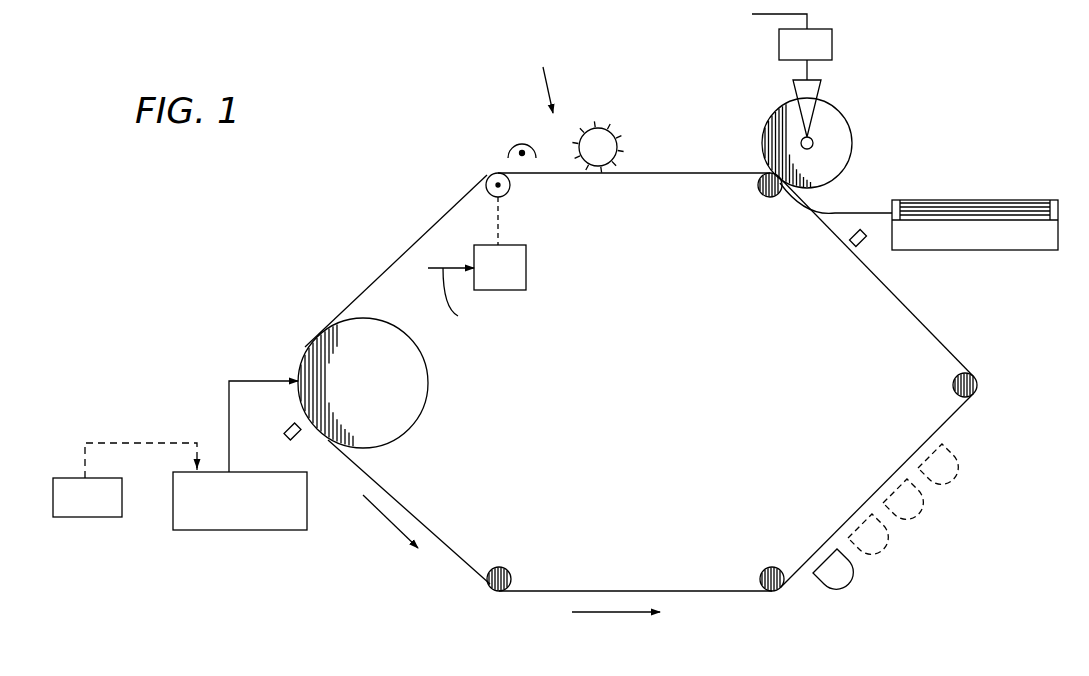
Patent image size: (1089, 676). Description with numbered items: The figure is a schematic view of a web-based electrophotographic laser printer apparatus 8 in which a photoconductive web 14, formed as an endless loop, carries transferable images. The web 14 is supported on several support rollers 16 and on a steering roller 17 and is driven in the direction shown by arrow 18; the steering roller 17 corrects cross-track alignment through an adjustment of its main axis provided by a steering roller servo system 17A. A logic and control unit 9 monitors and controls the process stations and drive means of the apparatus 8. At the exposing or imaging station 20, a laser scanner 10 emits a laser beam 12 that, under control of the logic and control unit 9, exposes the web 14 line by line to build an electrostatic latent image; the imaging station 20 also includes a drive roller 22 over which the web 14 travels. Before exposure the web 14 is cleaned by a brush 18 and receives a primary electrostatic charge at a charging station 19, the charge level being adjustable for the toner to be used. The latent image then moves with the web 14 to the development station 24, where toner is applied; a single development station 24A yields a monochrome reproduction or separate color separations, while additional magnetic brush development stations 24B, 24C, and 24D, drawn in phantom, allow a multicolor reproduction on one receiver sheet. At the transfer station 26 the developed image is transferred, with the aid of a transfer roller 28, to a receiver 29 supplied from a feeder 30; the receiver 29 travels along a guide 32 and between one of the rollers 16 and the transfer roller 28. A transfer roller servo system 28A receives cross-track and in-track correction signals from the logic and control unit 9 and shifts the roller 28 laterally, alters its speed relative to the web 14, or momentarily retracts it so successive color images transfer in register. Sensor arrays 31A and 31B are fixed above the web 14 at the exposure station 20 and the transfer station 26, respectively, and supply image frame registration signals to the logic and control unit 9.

The laser printer apparatus 8 is at (545, 80).
The logic and control unit 9 is at (85, 518).
The laser scanner 10 is at (240, 531).
The laser beam 12 is at (229, 416).
The photoconductive web 14 is at (866, 272).
The support rollers 16 is at (758, 192).
The steering roller 17 is at (510, 190).
The steering roller servo system 17A is at (526, 258).
The arrow 18 is at (620, 120).
The charging station 19 is at (493, 148).
The exposing or imaging station 20 is at (326, 292).
The drive roller 22 is at (428, 388).
The development station 24 is at (1060, 578).
The single development station 24A is at (857, 578).
The additional development station 24B is at (895, 543).
The additional development station 24C is at (930, 507).
The additional development station 24D is at (962, 470).
The transfer station 26 is at (733, 142).
The transfer roller 28 is at (853, 135).
The transfer roller servo system 28A is at (832, 48).
The receiver 29 is at (1022, 200).
The feeder 30 is at (1005, 243).
The sensor array 31A is at (290, 425).
The sensor array 31B is at (865, 246).
The guide 32 is at (850, 211).